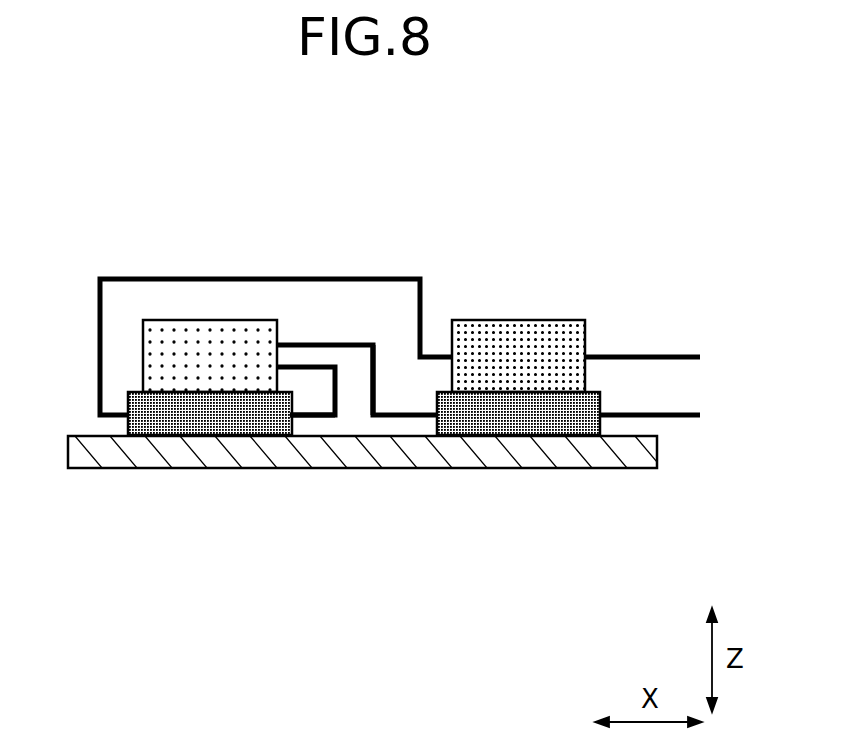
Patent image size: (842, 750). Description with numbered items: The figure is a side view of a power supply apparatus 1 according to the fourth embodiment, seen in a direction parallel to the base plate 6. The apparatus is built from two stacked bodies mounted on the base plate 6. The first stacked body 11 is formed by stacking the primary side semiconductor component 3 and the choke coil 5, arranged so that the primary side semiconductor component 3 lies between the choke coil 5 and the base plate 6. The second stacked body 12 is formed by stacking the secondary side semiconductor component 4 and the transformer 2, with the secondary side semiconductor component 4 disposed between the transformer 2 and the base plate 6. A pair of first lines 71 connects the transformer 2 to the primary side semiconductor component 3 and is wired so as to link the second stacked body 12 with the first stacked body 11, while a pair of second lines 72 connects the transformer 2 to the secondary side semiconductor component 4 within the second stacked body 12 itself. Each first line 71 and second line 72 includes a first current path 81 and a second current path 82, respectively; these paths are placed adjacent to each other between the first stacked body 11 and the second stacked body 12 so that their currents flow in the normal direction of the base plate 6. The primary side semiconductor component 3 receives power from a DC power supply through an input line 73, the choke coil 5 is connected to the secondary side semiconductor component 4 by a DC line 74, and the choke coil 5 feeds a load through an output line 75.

The power supply apparatus 1 is at (490, 194).
The transformer 2 is at (203, 340).
The primary side semiconductor component 3 is at (510, 415).
The secondary side semiconductor component 4 is at (172, 422).
The choke coil 5 is at (500, 337).
The base plate 6 is at (580, 457).
The first stacked body 11 is at (585, 296).
The second stacked body 12 is at (222, 313).
The first line 71 is at (405, 418).
The second line 72 is at (303, 418).
The input line 73 is at (687, 420).
The DC line 74 is at (120, 278).
The output line 75 is at (667, 355).
The first current path 81 is at (370, 392).
The second current path 82 is at (337, 393).